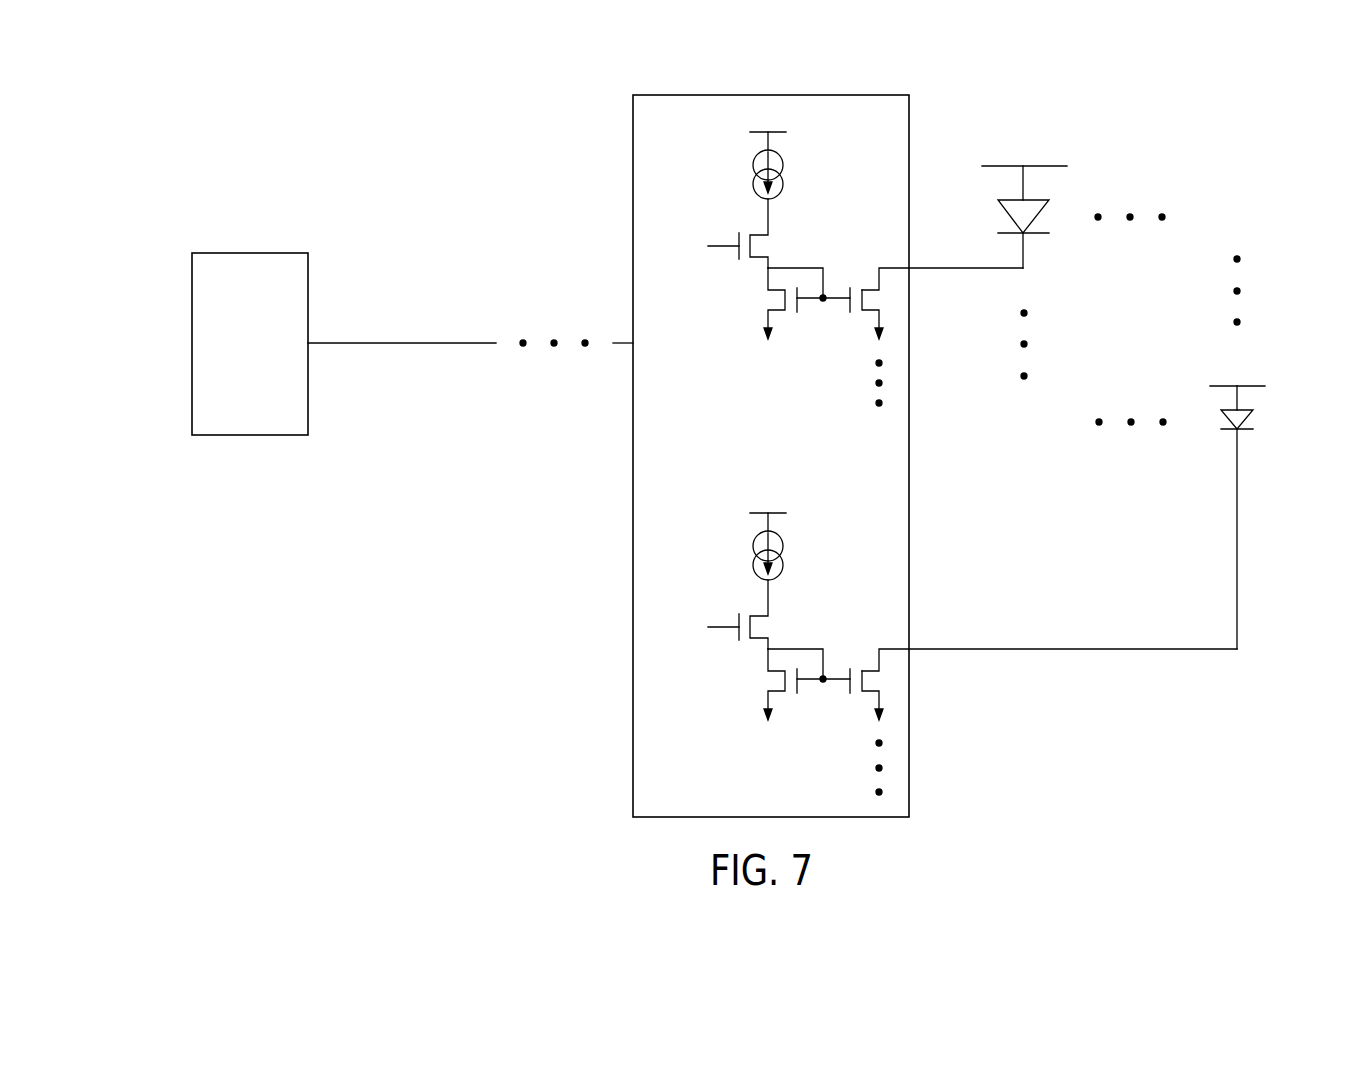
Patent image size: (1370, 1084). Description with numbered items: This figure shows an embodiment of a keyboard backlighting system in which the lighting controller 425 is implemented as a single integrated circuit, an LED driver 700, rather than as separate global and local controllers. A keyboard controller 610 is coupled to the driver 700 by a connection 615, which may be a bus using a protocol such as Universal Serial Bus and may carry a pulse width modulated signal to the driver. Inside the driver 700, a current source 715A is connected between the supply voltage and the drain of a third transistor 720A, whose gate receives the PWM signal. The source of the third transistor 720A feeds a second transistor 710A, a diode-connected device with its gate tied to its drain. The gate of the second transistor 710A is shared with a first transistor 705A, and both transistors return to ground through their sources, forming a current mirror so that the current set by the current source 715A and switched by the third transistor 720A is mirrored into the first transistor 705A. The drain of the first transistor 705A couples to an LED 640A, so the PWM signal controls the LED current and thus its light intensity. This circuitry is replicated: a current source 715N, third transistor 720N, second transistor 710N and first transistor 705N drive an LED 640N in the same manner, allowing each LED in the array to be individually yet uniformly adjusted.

The lighting controller 425 is at (620, 58).
The LED driver 700 is at (878, 94).
The keyboard controller 610 is at (270, 253).
The connection 615 is at (385, 343).
The current source 715A is at (782, 181).
The third transistor 720A is at (769, 226).
The second transistor 710A is at (783, 311).
The first transistor 705A is at (870, 283).
The current source 715N is at (782, 562).
The third transistor 720N is at (769, 607).
The second transistor 710N is at (783, 692).
The first transistor 705N is at (870, 664).
The LED 640A is at (1043, 212).
The LED 640N is at (1250, 420).